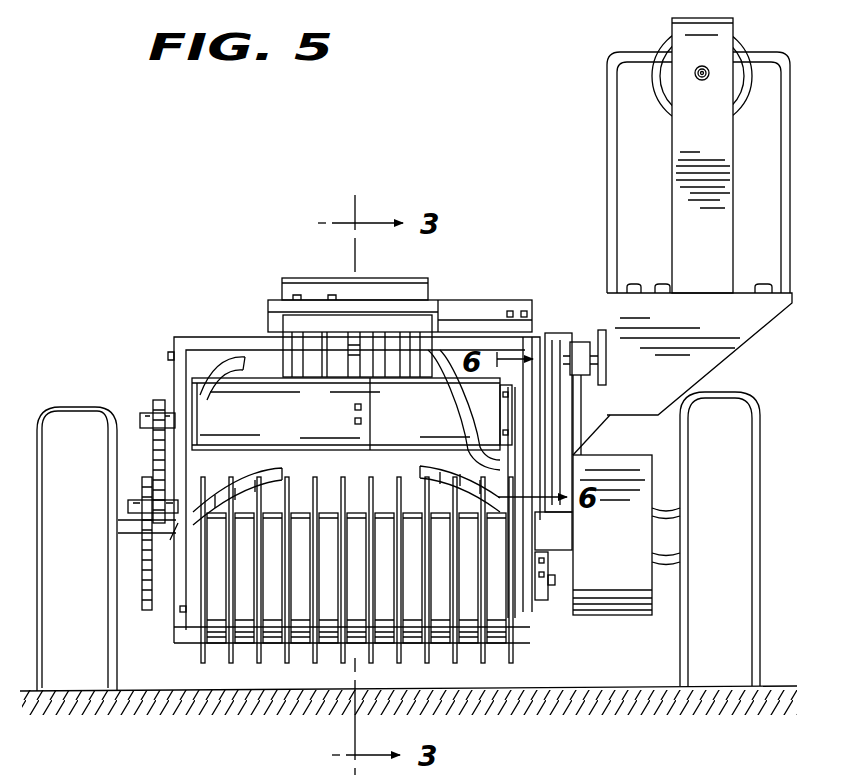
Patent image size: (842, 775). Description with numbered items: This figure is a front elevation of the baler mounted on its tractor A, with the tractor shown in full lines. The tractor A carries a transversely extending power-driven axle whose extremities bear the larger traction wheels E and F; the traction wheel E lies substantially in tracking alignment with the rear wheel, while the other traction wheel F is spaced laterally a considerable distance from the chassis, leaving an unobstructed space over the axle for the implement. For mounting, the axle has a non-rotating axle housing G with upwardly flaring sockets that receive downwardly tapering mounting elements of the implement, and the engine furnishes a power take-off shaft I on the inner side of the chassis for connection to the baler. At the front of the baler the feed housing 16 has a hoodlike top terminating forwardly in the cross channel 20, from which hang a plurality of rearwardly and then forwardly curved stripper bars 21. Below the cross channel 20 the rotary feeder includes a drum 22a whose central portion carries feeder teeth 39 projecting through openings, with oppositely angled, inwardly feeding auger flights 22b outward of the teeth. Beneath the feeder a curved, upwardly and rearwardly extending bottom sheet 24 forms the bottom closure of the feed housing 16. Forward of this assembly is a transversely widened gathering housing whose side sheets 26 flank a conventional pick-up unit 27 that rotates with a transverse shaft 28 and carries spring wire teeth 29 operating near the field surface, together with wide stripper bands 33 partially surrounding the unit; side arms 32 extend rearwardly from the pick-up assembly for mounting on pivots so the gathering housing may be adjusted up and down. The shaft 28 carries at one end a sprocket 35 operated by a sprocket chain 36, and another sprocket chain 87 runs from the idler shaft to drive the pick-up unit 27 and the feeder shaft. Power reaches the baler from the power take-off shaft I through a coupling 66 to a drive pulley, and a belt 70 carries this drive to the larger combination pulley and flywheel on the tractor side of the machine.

The feed housing 16 is at (392, 274).
The cross channel 20 is at (430, 312).
The stripper bars 21 is at (346, 330).
The drum 22a is at (325, 418).
The auger flights 22b is at (217, 358).
The bottom sheet 24 is at (378, 478).
The side sheets 26 is at (180, 607).
The pick-up unit 27 is at (247, 653).
The shaft 28 is at (135, 590).
The spring wire teeth 29 is at (343, 658).
The side arms 32 is at (545, 541).
The stripper bands 33 is at (411, 660).
The sprocket 35 is at (150, 612).
The sprocket chain 36 is at (140, 547).
The feeder teeth 39 is at (372, 414).
The coupling 66 is at (580, 342).
The belt 70 is at (562, 413).
The sprocket chain 87 is at (153, 448).
The tractor A is at (604, 160).
The traction wheel E is at (742, 588).
The traction wheel F is at (60, 410).
The axle housing G is at (570, 565).
The power take-off shaft I is at (599, 344).